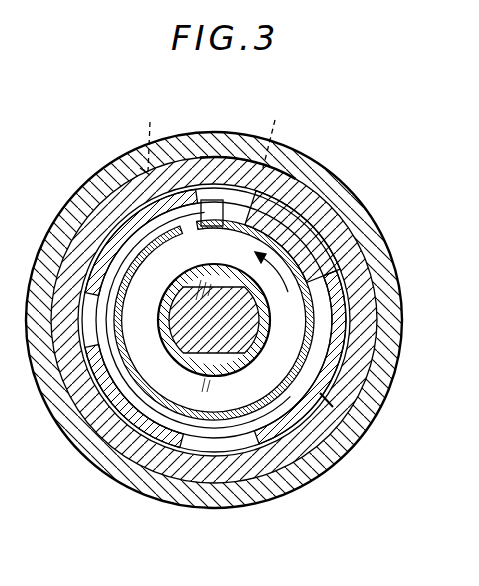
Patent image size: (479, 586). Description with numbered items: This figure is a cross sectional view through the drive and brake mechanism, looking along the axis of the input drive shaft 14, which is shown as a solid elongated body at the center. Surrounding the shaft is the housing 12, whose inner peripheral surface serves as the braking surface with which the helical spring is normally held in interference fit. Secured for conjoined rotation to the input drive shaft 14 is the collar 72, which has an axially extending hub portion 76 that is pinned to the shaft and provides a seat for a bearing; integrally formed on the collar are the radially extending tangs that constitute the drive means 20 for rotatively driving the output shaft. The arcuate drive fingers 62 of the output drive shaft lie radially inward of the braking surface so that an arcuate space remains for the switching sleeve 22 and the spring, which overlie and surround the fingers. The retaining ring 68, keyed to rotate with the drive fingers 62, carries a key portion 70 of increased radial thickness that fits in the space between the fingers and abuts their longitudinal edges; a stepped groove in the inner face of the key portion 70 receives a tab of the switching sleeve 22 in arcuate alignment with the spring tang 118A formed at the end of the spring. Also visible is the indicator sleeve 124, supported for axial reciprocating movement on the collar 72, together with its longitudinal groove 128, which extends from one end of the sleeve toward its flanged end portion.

The housing 12 is at (384, 229).
The input drive shaft 14 is at (234, 352).
The drive means 20 is at (215, 139).
The switching sleeve 22 is at (306, 383).
The drive fingers 62 is at (340, 345).
The retaining ring 68 is at (353, 403).
The key portion 70 is at (316, 193).
The collar 72 is at (277, 243).
The hub portion 76 is at (206, 368).
The tang 118A is at (213, 195).
The sleeve 124 is at (313, 303).
The longitudinal groove 128 is at (300, 273).